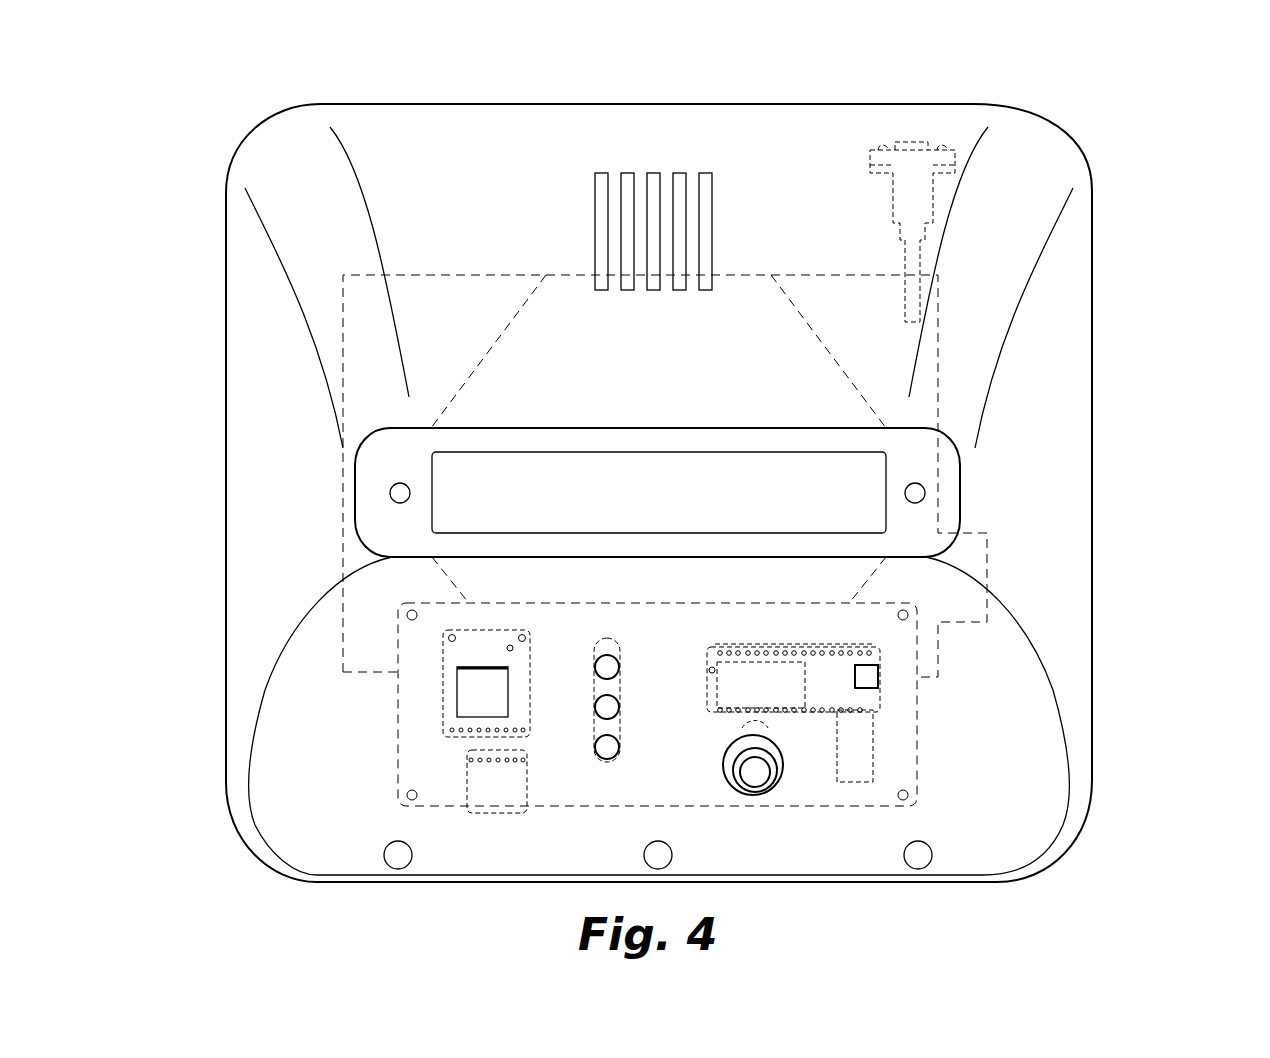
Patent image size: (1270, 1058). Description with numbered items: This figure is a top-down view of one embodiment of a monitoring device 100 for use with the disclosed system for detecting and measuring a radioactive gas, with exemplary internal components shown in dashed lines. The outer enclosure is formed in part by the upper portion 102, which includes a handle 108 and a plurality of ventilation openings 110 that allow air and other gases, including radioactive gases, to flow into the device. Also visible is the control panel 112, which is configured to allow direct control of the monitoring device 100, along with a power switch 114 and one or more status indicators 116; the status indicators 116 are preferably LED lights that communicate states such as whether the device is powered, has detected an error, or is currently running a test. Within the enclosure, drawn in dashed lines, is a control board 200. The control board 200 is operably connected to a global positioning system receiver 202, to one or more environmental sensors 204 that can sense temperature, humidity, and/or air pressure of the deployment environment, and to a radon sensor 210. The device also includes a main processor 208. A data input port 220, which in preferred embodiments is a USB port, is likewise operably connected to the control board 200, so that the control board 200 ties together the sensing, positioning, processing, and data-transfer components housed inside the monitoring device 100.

The monitoring device 100 is at (268, 115).
The upper portion 102 is at (1052, 148).
The handle 108 is at (813, 483).
The ventilation openings 110 is at (678, 178).
The control panel 112 is at (300, 732).
The power switch 114 is at (757, 777).
The status indicators 116 is at (583, 742).
The control board 200 is at (907, 643).
The global positioning system (GPS) receiver 202 is at (467, 662).
The environmental sensors 204 is at (490, 795).
The main processor 208 is at (828, 695).
The radon sensor 210 is at (928, 353).
The data input port 220 is at (917, 180).